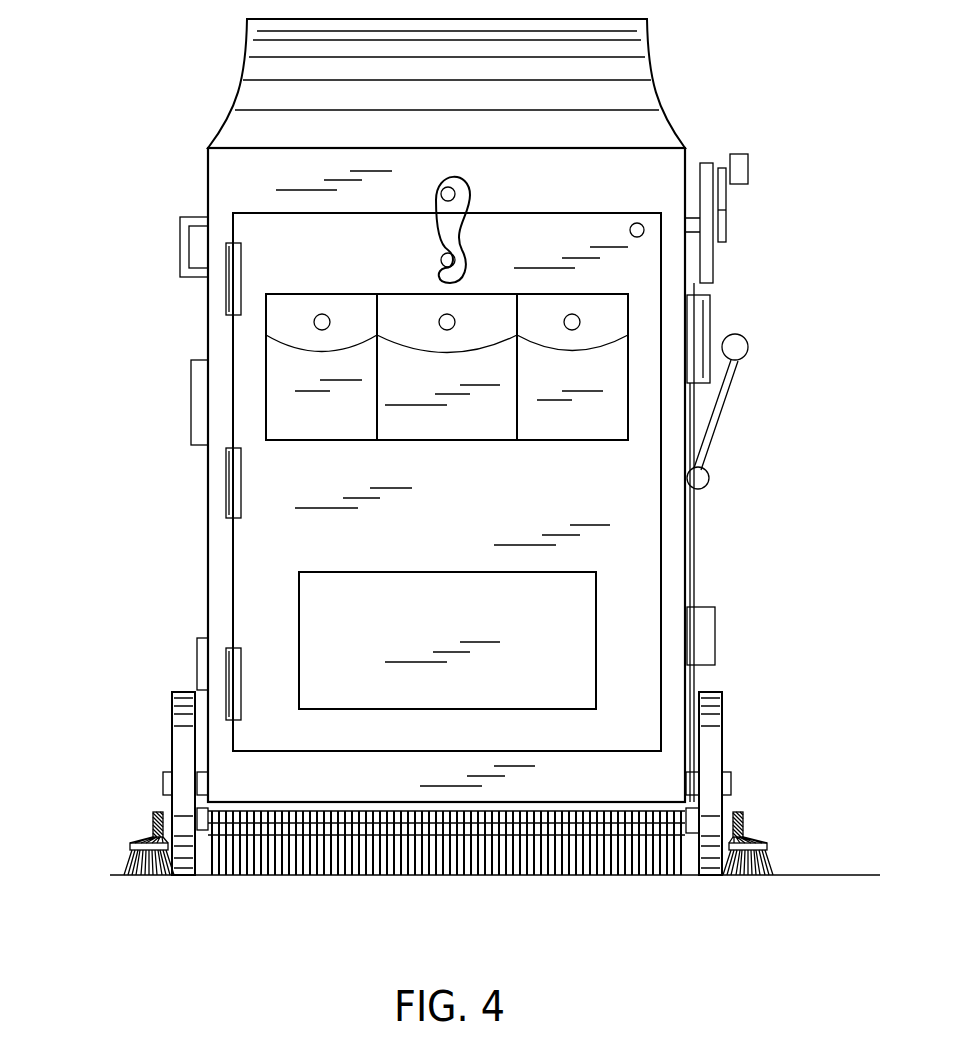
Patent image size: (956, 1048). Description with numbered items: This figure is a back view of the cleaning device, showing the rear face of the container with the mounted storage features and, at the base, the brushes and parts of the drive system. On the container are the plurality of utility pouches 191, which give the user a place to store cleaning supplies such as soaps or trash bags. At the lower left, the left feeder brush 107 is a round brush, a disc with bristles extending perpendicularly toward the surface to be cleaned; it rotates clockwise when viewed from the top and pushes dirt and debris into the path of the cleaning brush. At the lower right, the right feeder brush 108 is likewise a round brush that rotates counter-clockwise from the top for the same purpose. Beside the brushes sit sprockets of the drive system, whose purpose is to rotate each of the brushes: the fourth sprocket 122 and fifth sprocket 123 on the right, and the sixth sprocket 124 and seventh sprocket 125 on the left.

The left feeder brush 107 is at (120, 867).
The right feeder brush 108 is at (772, 867).
The fourth sprocket 122 is at (738, 810).
The fifth sprocket 123 is at (752, 838).
The sixth sprocket 124 is at (155, 812).
The seventh sprocket 125 is at (148, 838).
The plurality of utility pouches 191 is at (550, 418).